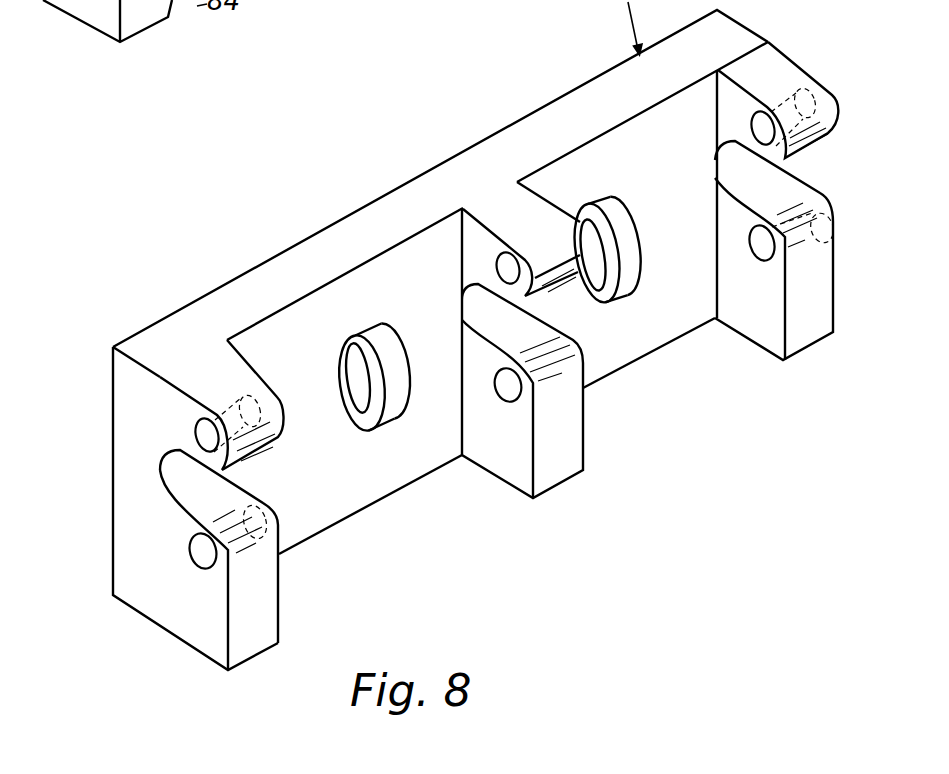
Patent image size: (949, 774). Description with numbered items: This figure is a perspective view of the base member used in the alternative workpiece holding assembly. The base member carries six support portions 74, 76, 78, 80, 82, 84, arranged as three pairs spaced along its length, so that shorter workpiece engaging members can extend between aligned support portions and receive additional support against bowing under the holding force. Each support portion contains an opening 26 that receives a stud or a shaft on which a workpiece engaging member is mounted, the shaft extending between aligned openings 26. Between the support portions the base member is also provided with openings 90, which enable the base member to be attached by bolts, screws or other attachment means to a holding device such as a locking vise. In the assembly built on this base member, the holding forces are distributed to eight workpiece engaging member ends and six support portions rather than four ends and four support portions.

The opening 26 is at (203, 437).
The support portion 74 is at (788, 72).
The support portion 76 is at (820, 295).
The support portion 78 is at (512, 214).
The support portion 80 is at (568, 433).
The support portion 82 is at (172, 400).
The support portion 84 is at (265, 590).
The opening 90 is at (392, 413).